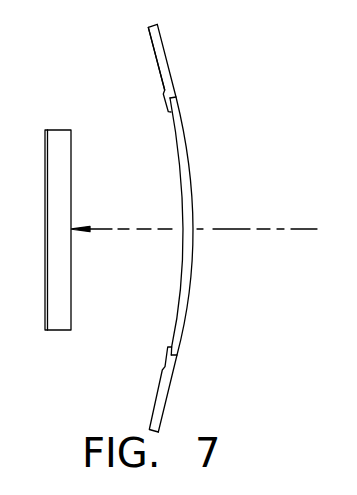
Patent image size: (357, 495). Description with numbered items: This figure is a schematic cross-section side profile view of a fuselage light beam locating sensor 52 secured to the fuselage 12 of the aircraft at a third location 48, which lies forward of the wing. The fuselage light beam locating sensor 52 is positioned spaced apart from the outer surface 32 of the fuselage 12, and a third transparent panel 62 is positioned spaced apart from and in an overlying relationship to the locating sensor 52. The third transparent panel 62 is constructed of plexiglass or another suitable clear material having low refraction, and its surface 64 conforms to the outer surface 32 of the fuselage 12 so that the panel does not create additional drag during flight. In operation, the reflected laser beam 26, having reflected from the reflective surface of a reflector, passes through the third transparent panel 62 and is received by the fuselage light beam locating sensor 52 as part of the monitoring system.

The fuselage 12 is at (166, 70).
The reflected laser beam 26 is at (225, 229).
The outer surface 32 is at (163, 42).
The third location 48 is at (222, 228).
The fuselage light beam locating sensor 52 is at (58, 331).
The third transparent panel 62 is at (208, 355).
The surface 64 is at (188, 146).